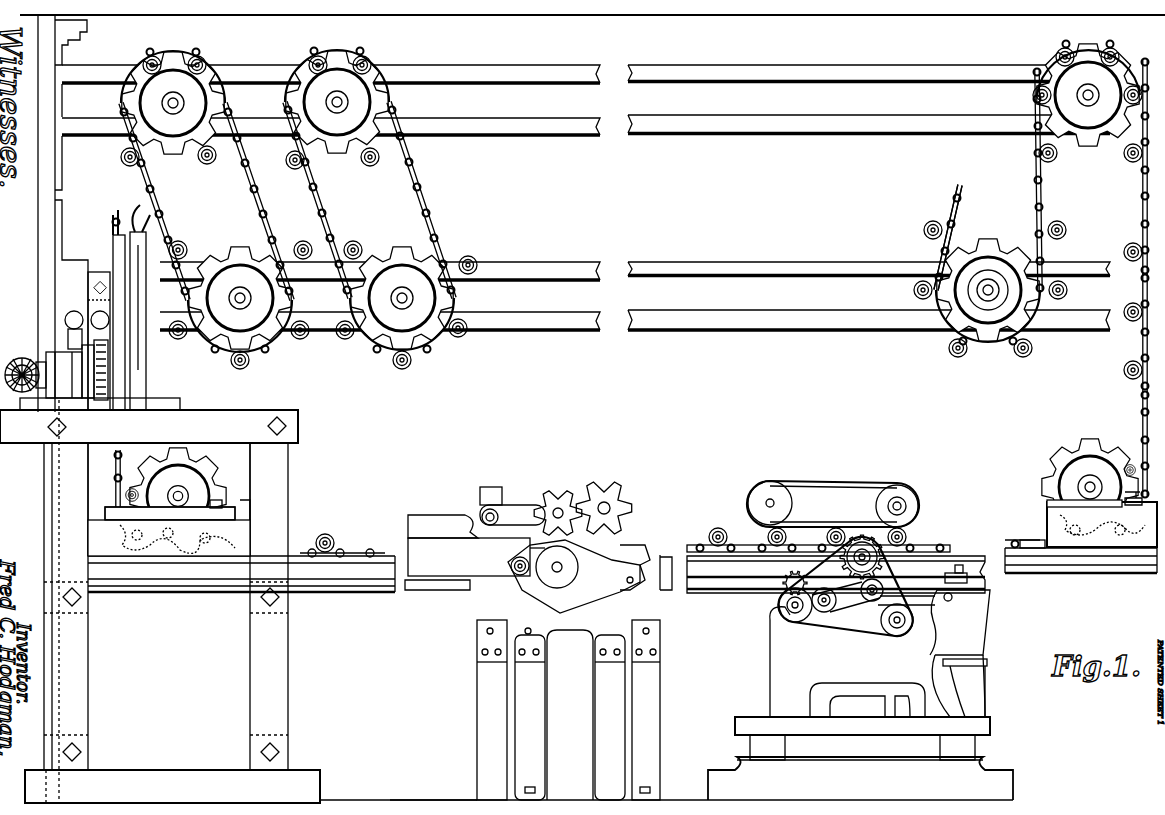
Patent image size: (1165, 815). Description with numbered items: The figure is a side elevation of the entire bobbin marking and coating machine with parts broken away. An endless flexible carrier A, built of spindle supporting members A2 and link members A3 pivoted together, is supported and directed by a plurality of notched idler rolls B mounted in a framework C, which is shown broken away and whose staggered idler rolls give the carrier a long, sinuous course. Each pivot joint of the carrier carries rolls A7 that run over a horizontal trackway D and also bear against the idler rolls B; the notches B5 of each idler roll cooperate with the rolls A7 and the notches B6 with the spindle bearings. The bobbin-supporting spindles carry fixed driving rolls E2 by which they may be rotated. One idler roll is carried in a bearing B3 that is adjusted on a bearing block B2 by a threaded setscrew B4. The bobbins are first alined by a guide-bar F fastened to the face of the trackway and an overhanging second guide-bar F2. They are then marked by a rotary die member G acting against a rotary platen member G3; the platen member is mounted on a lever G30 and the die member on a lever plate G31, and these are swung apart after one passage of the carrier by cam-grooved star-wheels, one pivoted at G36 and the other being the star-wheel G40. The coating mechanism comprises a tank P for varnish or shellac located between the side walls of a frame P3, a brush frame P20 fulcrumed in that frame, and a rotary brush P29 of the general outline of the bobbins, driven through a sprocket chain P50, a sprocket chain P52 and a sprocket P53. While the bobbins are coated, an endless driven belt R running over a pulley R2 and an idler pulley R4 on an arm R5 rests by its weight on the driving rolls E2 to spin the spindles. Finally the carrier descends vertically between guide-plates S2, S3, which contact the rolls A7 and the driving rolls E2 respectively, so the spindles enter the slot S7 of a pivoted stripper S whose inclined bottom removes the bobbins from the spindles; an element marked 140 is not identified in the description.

The framework C is at (240, 525).
The idler rolls B is at (232, 455).
The endless flexible carrier A is at (455, 265).
The stripper S is at (140, 372).
The guide-plate S2 is at (113, 232).
The slot S7 is at (126, 222).
The guide-plate S3 is at (152, 218).
The driving gear 140 is at (68, 333).
The bearing block B2 is at (1075, 560).
The bearing B3 is at (1096, 480).
The threaded setscrew B4 is at (1130, 535).
The notches B5 is at (995, 240).
The notches B6 is at (960, 240).
The trackway D is at (1080, 568).
The driving roll E2 is at (1128, 245).
The spindle supporting members A2 is at (1142, 272).
The rolls A7 is at (1145, 330).
The link members A3 is at (1140, 400).
The guide-bar F is at (450, 580).
The second guide-bar F2 is at (445, 515).
The rotary die member G is at (550, 575).
The rotary platen member G3 is at (560, 498).
The lever G30 is at (515, 508).
The lever plate G31 is at (580, 600).
The pivot of star-wheel G36 is at (618, 498).
The star-wheel G40 is at (640, 545).
The endless driven belt R is at (850, 484).
The pulley R2 is at (772, 502).
The idler pulley R4 is at (895, 500).
The arm R5 is at (860, 540).
The tank P is at (980, 625).
The frame P3 is at (940, 685).
The brush frame P20 is at (810, 625).
The rotary brush P29 is at (868, 552).
The sprocket chain P50 is at (880, 580).
The sprocket chain P52 is at (830, 618).
The sprocket P53 is at (785, 602).